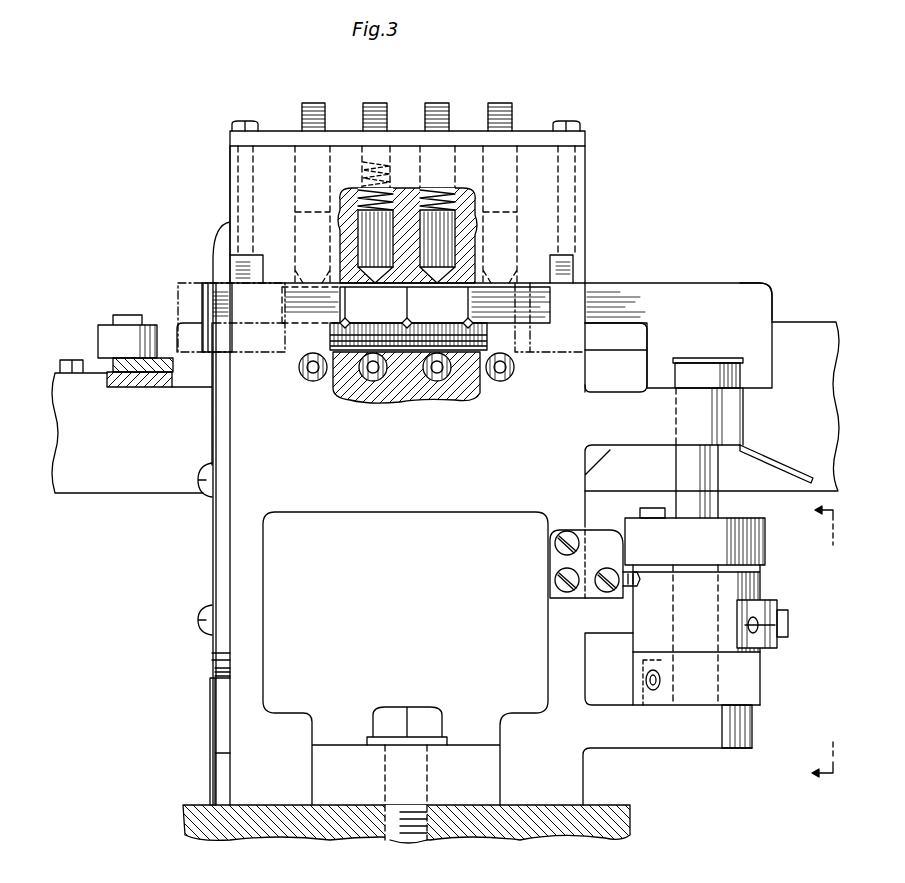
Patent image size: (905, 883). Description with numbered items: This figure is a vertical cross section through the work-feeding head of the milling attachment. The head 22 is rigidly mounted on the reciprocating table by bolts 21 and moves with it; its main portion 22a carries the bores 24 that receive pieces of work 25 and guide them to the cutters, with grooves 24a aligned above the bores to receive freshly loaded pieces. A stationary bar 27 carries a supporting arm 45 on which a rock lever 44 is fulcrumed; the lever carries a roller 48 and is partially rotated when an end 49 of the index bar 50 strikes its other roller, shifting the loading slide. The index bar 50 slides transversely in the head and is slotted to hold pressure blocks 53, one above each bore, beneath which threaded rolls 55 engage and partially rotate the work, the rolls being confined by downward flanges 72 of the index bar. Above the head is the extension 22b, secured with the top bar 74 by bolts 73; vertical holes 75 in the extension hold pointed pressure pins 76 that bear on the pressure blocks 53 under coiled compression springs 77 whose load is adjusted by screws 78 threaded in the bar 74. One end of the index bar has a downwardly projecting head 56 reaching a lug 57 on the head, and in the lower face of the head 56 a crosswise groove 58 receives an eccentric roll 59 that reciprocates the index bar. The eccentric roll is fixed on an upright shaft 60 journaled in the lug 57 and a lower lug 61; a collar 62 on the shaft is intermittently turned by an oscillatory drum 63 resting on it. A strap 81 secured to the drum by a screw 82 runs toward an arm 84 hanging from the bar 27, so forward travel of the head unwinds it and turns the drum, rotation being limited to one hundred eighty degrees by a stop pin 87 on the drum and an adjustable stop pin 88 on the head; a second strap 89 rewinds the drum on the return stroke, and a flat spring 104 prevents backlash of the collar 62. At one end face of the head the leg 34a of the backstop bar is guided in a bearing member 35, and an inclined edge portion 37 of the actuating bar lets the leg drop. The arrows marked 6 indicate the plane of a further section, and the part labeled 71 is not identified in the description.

The section line 6- 6 is at (833, 641).
The bolts 21 is at (435, 718).
The head 22 is at (210, 429).
The portion of the head 22a is at (355, 512).
The head extension 22b is at (588, 178).
The bores 24 is at (516, 370).
The grooves 24a is at (375, 380).
The piece of work 25 is at (308, 382).
The stationary bar 27 is at (818, 330).
The leg of L-shaped bar 34a is at (218, 663).
The bearing member 35 is at (210, 645).
The inclined edge portion 37 is at (222, 712).
The rock lever 44 is at (108, 374).
The supporting arm 45 is at (145, 385).
The roller 48 is at (107, 332).
The end of index bar 49 is at (200, 290).
The index bar 50 is at (608, 282).
The pressure blocks 53 is at (345, 303).
The threaded rolls 55 is at (447, 340).
The downwardly projecting head 56 is at (774, 296).
The lug 57 is at (745, 410).
The groove 58 is at (718, 358).
The eccentric roll 59 is at (745, 377).
The upright shaft 60 is at (715, 482).
The lug 61 is at (753, 725).
The collar 62 is at (745, 678).
The oscillatory drum 63 is at (752, 578).
The guide block 71 is at (223, 345).
The flanges 72 is at (275, 345).
The bolts 73 is at (238, 121).
The top bar 74 is at (588, 140).
The vertical holes 75 is at (367, 160).
The pressure pins 76 is at (427, 222).
The coiled compression springs 77 is at (360, 205).
The screws 78 is at (426, 103).
The flexible connection 81 is at (772, 640).
The screw 82 is at (770, 625).
The arm 84 is at (790, 615).
The stop pin 87 is at (632, 580).
The adjustable stop pin 88 is at (602, 590).
The second flexible connection 89 is at (765, 533).
The flat spring 104 is at (650, 700).